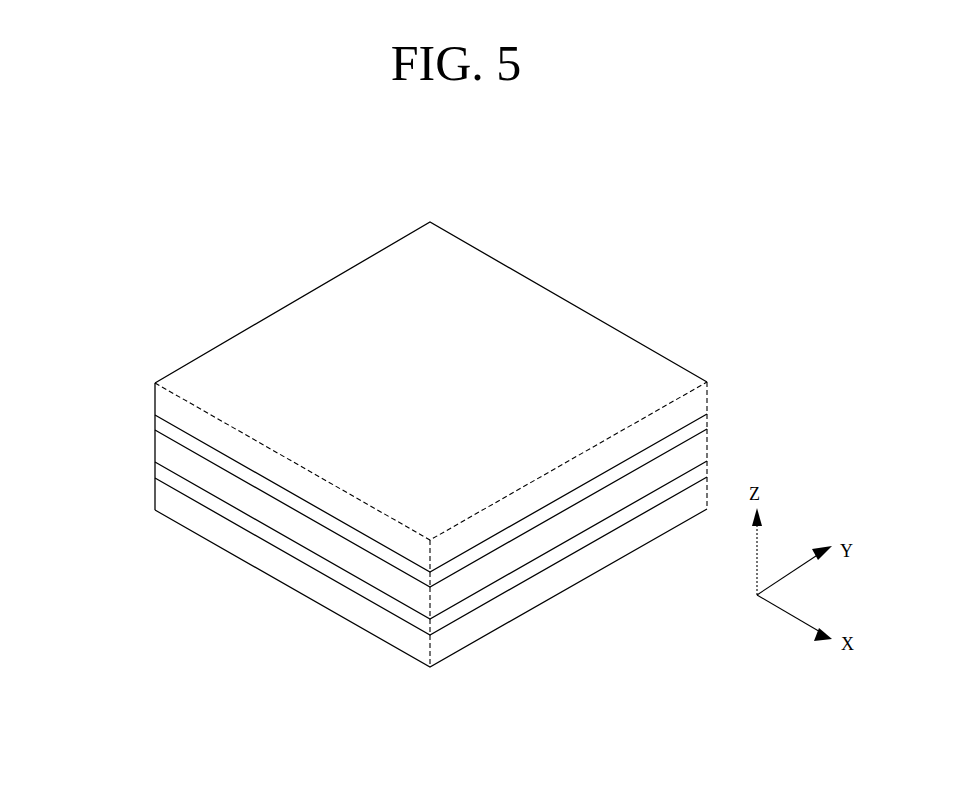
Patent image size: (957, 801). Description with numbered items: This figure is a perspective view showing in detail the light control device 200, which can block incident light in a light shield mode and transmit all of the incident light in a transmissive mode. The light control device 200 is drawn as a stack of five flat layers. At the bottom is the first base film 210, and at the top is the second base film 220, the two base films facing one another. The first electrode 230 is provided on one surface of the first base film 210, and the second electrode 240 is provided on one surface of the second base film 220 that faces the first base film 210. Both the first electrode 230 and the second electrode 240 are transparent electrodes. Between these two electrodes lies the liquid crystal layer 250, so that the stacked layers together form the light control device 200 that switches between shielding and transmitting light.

The light control device 200 is at (603, 243).
The first base film 210 is at (155, 494).
The second base film 220 is at (155, 398).
The first electrode 230 is at (155, 470).
The second electrode 240 is at (155, 423).
The liquid crystal layer 250 is at (155, 447).